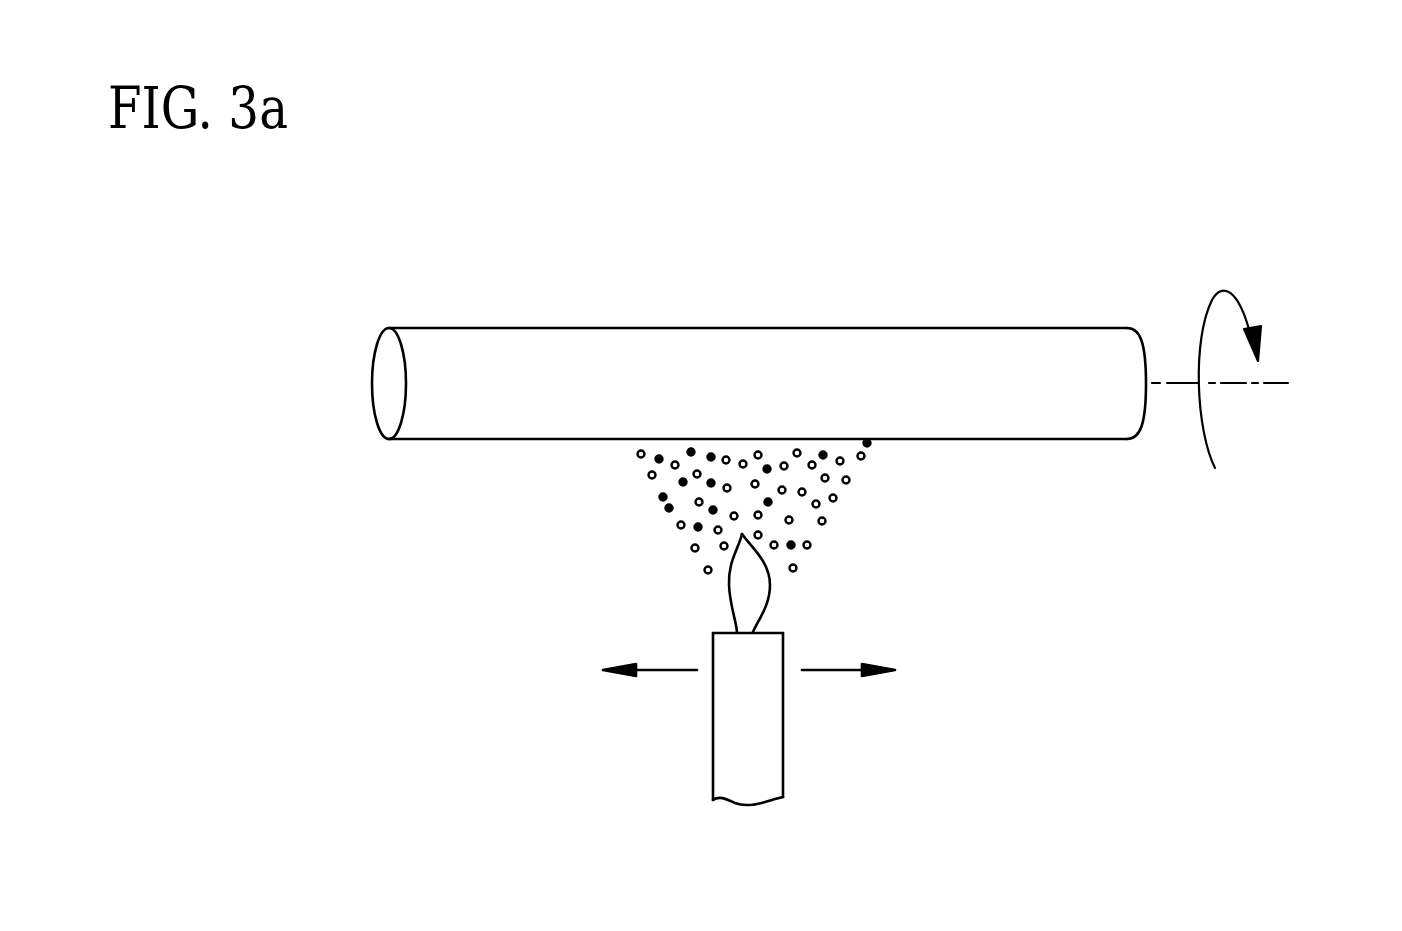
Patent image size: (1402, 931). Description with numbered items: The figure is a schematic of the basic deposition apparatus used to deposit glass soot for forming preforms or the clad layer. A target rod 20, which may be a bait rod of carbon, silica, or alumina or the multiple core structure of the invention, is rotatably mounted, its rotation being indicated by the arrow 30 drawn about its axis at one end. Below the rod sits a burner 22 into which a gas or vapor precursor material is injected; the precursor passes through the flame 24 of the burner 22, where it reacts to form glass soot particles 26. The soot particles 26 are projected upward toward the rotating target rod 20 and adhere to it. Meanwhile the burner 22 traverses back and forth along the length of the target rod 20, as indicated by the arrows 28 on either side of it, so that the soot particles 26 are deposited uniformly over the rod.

The target rod 20 is at (1042, 352).
The burner 22 is at (753, 775).
The flame 24 is at (767, 600).
The soot particles 26 is at (825, 523).
The arrows 28 is at (653, 670).
The arrow 30 is at (1245, 301).